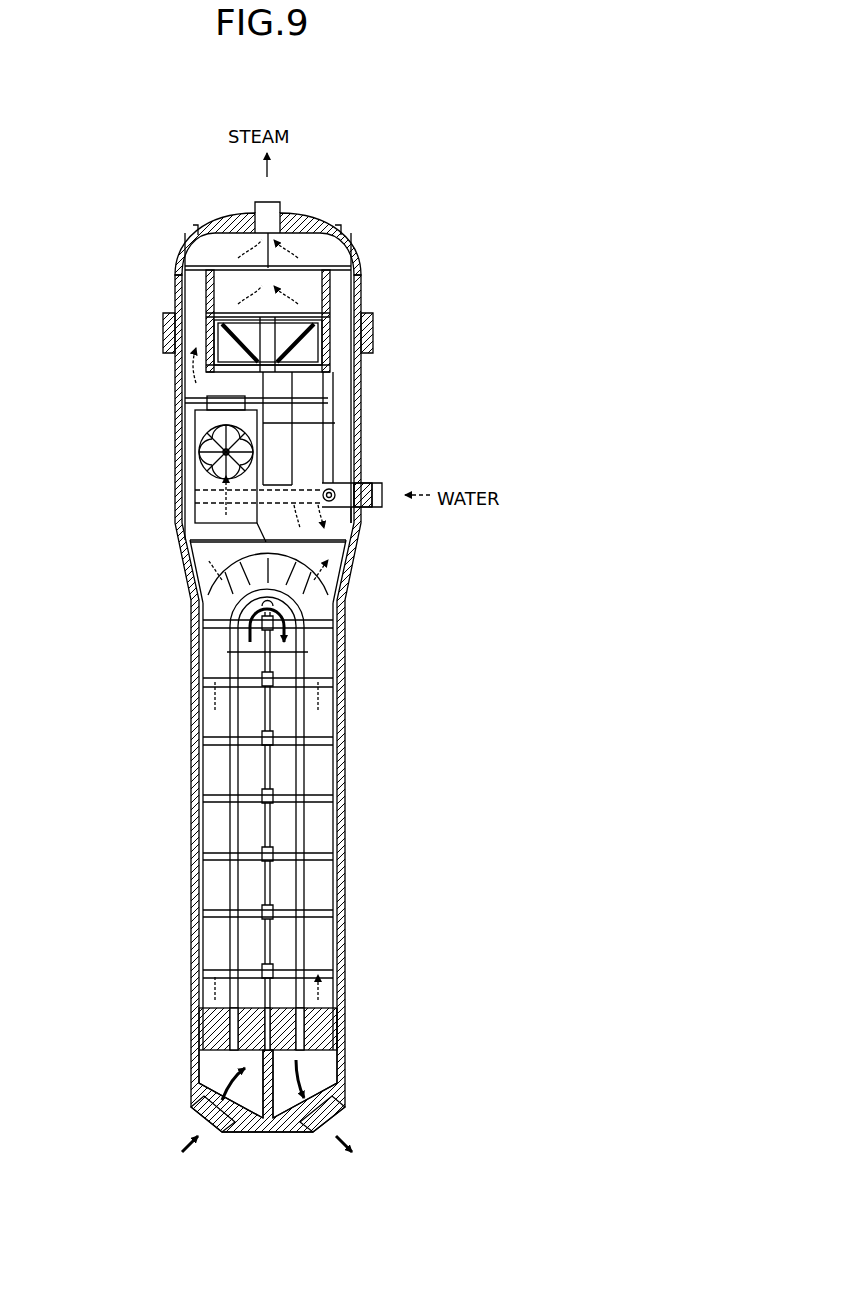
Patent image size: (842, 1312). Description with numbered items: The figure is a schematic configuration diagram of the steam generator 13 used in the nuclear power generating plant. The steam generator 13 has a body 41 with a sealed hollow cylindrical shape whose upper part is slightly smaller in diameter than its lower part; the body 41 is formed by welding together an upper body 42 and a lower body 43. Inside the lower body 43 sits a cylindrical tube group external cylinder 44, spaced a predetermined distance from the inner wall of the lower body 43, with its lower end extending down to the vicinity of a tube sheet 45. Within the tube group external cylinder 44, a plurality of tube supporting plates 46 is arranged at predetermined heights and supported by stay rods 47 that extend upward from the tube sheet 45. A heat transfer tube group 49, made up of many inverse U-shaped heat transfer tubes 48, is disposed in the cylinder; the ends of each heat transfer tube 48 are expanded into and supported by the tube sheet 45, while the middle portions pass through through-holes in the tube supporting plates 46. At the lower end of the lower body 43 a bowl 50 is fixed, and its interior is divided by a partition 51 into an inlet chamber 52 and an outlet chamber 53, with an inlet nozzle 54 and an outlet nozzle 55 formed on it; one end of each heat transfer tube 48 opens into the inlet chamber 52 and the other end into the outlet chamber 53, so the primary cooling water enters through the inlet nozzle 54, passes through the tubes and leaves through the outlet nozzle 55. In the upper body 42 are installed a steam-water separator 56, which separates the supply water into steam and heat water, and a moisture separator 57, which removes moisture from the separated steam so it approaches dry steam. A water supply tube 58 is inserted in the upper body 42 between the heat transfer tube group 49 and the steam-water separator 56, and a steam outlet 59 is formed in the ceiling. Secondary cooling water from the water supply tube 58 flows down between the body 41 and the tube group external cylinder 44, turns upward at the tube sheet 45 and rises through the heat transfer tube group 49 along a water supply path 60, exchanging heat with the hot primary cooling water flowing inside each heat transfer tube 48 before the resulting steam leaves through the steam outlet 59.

The steam generator 13 is at (503, 121).
The body 41 is at (177, 365).
The upper body 42 is at (178, 273).
The lower body 43 is at (207, 633).
The tube group external cylinder 44 is at (195, 578).
The tube sheet 45 is at (343, 1022).
The tube supporting plates 46 is at (313, 677).
The stay rods 47 is at (272, 883).
The heat transfer tubes 48 is at (230, 772).
The heat transfer tube group 49 is at (347, 588).
The bowl 50 is at (190, 1058).
The partition 51 is at (272, 1126).
The inlet chamber 52 is at (213, 1072).
The outlet chamber 53 is at (323, 1067).
The inlet nozzle 54 is at (218, 1125).
The outlet nozzle 55 is at (322, 1128).
The steam-water separator 56 is at (205, 450).
The moisture separator 57 is at (307, 297).
The water supply tube 58 is at (378, 482).
The steam outlet 59 is at (270, 210).
The water supply path 60 is at (205, 950).